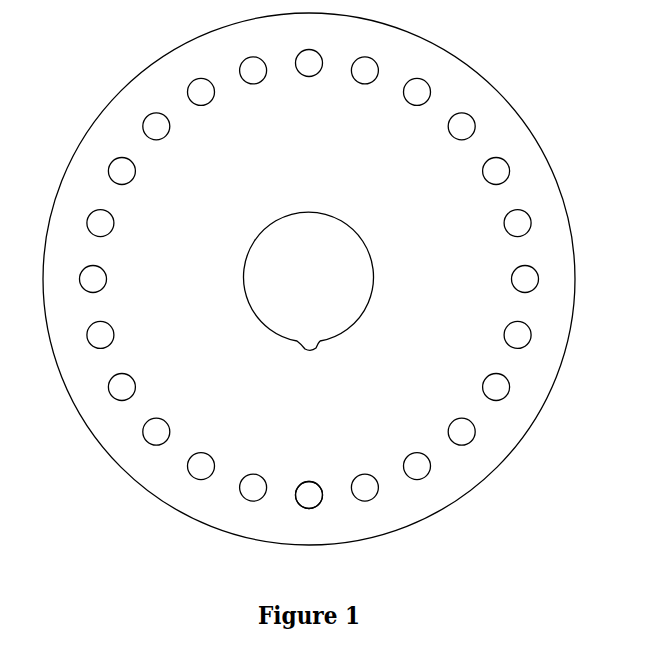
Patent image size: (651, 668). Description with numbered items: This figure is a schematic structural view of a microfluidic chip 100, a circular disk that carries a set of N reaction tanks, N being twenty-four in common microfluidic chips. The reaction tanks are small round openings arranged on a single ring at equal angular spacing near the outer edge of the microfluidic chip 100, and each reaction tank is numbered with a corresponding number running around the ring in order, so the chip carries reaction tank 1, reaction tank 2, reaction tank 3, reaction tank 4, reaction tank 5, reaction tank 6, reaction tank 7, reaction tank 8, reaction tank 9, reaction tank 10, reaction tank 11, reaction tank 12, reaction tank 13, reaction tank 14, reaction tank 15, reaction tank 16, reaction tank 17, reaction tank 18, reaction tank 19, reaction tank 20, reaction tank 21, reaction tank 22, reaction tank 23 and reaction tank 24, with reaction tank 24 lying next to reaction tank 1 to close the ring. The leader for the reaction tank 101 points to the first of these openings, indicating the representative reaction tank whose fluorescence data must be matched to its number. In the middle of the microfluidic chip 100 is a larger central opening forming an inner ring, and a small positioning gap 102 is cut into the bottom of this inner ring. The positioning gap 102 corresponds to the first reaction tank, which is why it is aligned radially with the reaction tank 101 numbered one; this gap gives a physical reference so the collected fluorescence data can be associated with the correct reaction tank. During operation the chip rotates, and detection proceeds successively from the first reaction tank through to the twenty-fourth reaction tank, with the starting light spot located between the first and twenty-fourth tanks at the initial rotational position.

The microfluidic chip 100 is at (472, 88).
The reaction tank 101 is at (307, 490).
The positioning gap 102 is at (307, 341).
The reaction tank number 1 is at (309, 510).
The reaction tank number 2 is at (364, 500).
The reaction tank number 3 is at (417, 480).
The reaction tank number 4 is at (463, 444).
The reaction tank number 5 is at (503, 396).
The reaction tank number 6 is at (526, 338).
The reaction tank number 7 is at (536, 279).
The reaction tank number 8 is at (528, 222).
The reaction tank number 9 is at (507, 167).
The reaction tank number 10 is at (473, 118).
The reaction tank number 11 is at (421, 78).
The reaction tank number 12 is at (364, 56).
The reaction tank number 13 is at (309, 50).
The reaction tank number 14 is at (250, 58).
The reaction tank number 15 is at (196, 78).
The reaction tank number 16 is at (151, 113).
The reaction tank number 17 is at (114, 161).
The reaction tank number 18 is at (89, 216).
The reaction tank number 19 is at (77, 279).
The reaction tank number 20 is at (87, 337).
The reaction tank number 21 is at (111, 396).
The reaction tank number 22 is at (147, 442).
The reaction tank number 23 is at (195, 478).
The reaction tank number 24 is at (248, 499).